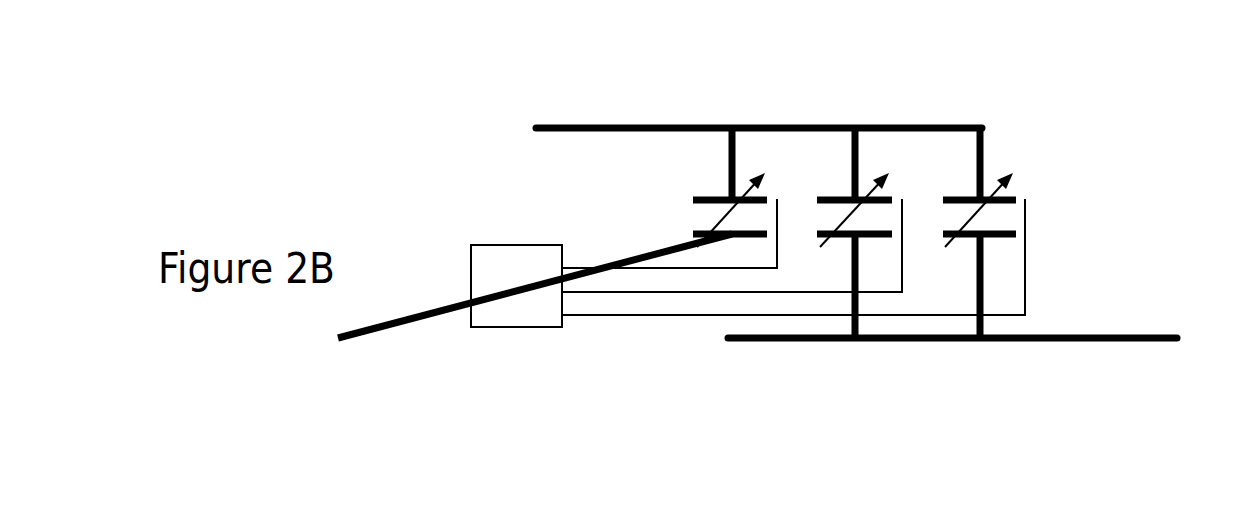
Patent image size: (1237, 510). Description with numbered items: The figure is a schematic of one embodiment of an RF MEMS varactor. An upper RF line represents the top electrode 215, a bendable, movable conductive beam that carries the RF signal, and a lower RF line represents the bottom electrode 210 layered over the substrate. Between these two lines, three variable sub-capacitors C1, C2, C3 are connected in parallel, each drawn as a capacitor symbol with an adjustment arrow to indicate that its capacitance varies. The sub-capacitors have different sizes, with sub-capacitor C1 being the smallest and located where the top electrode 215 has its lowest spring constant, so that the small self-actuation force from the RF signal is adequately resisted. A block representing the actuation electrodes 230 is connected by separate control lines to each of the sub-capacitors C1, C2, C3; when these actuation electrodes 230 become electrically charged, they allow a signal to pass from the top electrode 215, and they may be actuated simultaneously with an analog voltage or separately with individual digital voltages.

The top electrode 215 is at (757, 102).
The bottom electrode 210 is at (956, 337).
The actuation electrodes 230 is at (748, 263).
The sub-capacitor C1 is at (978, 233).
The sub-capacitor C2 is at (853, 233).
The sub-capacitor C3 is at (552, 233).